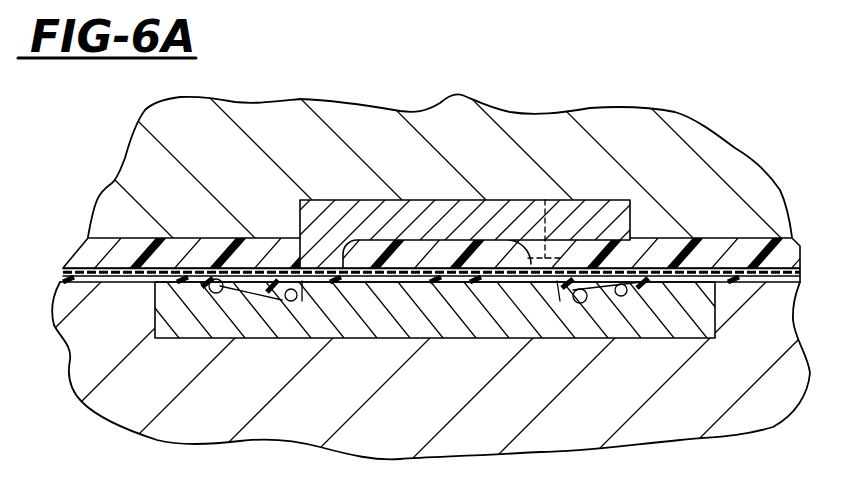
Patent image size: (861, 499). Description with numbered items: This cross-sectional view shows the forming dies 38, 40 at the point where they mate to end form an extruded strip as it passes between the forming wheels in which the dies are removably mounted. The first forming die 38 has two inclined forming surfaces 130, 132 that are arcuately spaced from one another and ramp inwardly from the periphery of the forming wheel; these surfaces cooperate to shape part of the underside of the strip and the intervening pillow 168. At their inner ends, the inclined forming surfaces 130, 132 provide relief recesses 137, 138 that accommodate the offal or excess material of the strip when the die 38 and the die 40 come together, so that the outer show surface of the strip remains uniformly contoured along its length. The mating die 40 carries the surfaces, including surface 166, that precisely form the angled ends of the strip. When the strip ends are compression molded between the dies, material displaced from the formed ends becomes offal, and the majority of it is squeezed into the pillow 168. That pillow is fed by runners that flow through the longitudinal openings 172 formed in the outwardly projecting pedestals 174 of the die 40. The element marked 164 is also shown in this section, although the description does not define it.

The first forming die 38 is at (448, 320).
The forming die 40 is at (569, 233).
The inclined forming surface 130 is at (212, 285).
The inclined forming surface 132 is at (628, 298).
The relief recess 137 is at (280, 295).
The relief recess 138 is at (582, 292).
The bonding layer 164 is at (278, 248).
The die surface 166 is at (632, 240).
The pillow 168 is at (372, 245).
The longitudinal opening 172 is at (540, 200).
The pedestal 174 is at (600, 210).